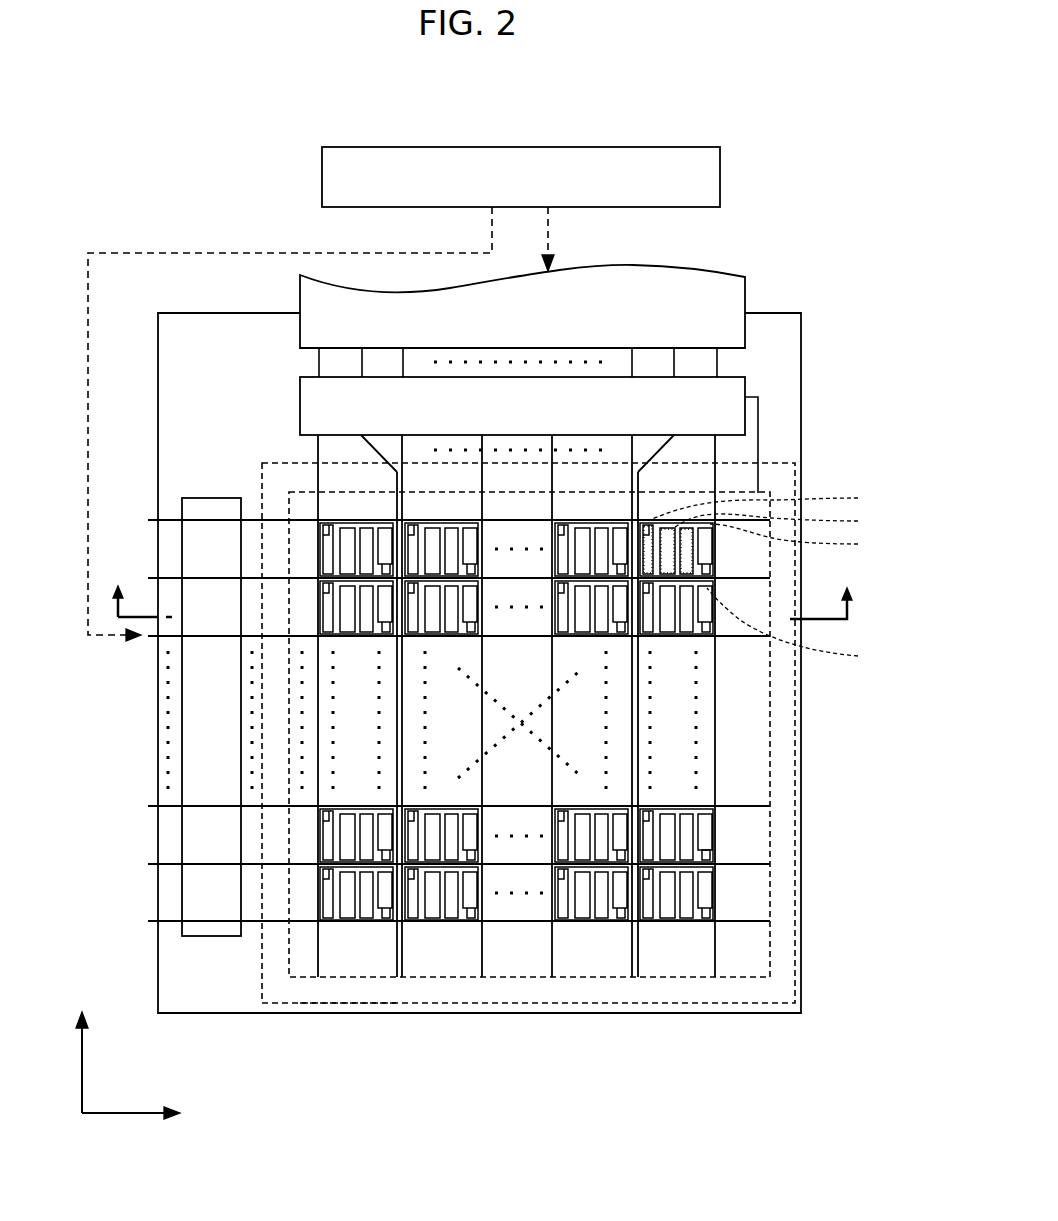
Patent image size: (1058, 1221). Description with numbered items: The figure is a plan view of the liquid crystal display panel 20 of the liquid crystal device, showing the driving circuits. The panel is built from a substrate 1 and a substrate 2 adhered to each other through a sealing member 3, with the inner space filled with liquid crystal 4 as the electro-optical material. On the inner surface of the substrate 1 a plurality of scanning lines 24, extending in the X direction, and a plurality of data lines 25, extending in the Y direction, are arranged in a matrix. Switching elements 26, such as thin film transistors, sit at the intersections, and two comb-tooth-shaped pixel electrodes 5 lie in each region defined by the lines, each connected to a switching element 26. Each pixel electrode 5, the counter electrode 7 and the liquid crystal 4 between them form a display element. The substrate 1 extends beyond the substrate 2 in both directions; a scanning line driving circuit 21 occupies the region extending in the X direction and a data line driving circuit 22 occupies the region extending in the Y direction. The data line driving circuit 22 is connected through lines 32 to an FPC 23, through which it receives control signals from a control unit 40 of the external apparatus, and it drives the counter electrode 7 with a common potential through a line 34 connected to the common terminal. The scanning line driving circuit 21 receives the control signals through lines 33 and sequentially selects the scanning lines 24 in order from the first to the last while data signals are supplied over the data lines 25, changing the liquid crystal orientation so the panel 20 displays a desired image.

The liquid crystal display panel 20 is at (561, 87).
The control unit 40 is at (720, 180).
The FPC (flexible printed circuit) 23 is at (745, 291).
The lines 32 is at (720, 362).
The data line driving circuit 22 is at (745, 389).
The line 34 is at (758, 418).
The data lines 25 is at (715, 452).
The substrate 1 is at (720, 1015).
The substrate 2 is at (262, 975).
The sealing member 3 is at (351, 988).
The counter electrode 7 is at (590, 978).
The liquid crystal 4 is at (425, 968).
The scanning lines 24 is at (538, 866).
The lines 33 is at (152, 919).
The scanning line driving circuit 21 is at (214, 937).
The pixel electrodes 5 is at (707, 830).
The switching elements 26 is at (708, 857).